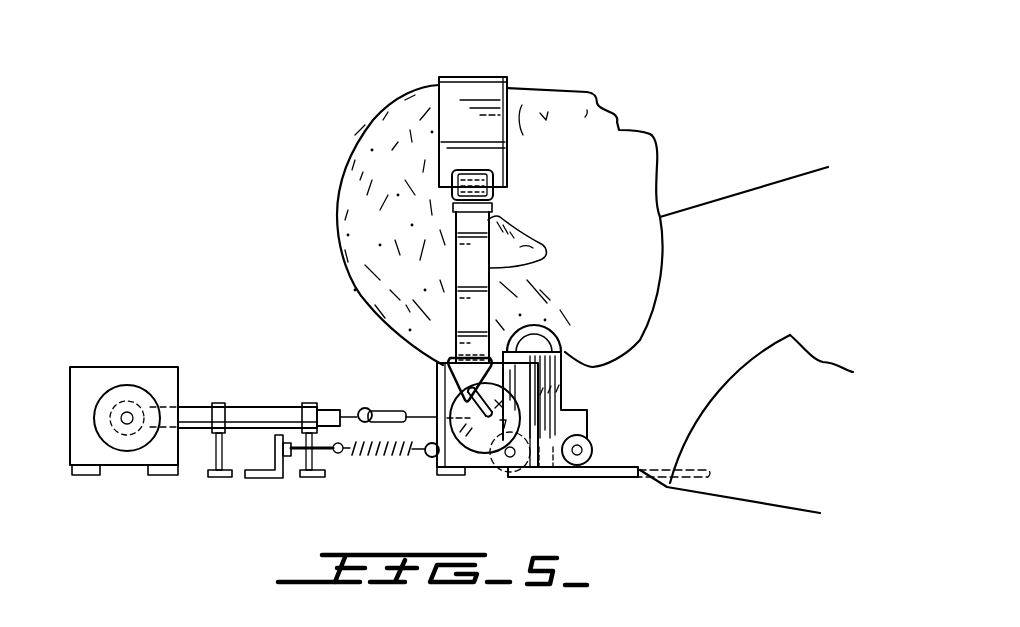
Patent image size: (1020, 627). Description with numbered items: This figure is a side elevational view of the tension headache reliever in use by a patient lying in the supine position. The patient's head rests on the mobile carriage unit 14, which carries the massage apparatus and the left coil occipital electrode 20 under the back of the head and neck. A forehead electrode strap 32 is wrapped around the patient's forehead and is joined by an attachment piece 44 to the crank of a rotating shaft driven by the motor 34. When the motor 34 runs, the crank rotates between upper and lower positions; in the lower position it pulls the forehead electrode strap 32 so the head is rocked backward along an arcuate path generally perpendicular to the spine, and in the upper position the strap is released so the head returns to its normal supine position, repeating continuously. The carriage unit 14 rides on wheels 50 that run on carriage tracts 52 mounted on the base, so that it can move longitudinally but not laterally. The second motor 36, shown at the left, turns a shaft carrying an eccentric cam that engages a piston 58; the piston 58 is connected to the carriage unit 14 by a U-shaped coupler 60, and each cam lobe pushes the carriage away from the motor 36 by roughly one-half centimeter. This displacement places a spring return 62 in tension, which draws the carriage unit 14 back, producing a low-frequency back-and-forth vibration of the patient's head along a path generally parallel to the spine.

The mobile carriage unit 14 is at (553, 447).
The left coil occipital electrode 20 is at (567, 345).
The forehead electrode strap 32 is at (487, 60).
The motor 34 is at (488, 468).
The motor 36 is at (133, 342).
The attachment piece 44 is at (442, 373).
The wheels 50 is at (588, 440).
The carriage tracts 52 is at (607, 478).
The piston 58 is at (286, 383).
The U-shaped coupler 60 is at (393, 392).
The spring return 62 is at (385, 458).